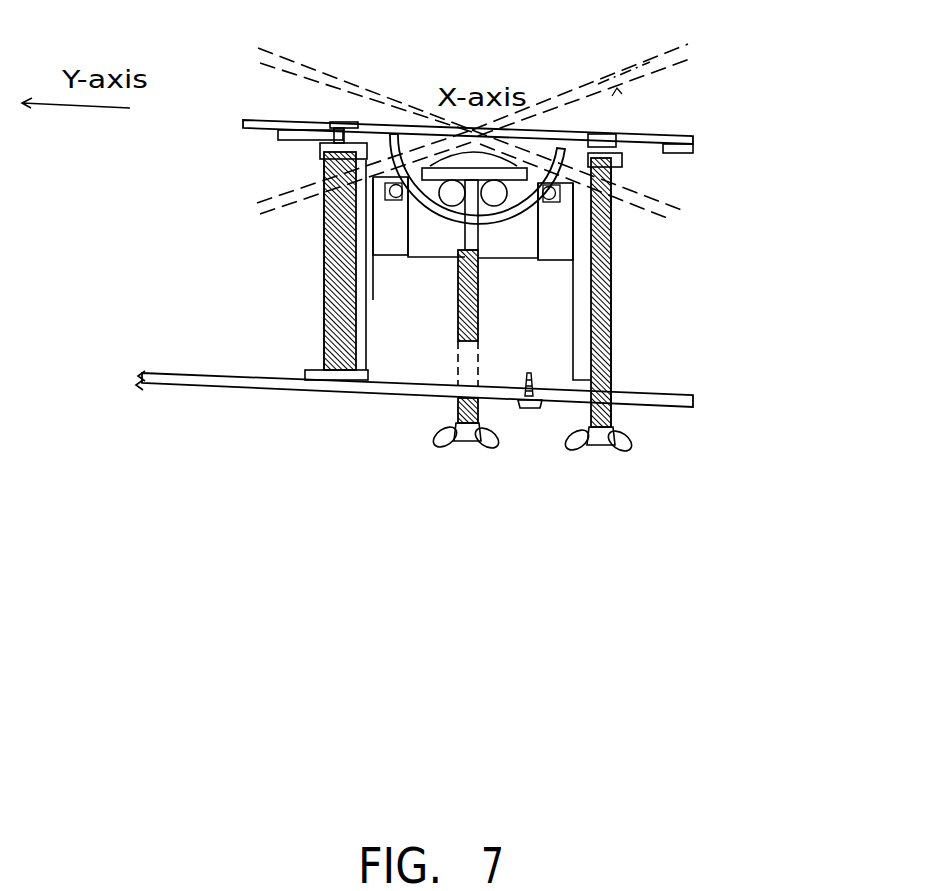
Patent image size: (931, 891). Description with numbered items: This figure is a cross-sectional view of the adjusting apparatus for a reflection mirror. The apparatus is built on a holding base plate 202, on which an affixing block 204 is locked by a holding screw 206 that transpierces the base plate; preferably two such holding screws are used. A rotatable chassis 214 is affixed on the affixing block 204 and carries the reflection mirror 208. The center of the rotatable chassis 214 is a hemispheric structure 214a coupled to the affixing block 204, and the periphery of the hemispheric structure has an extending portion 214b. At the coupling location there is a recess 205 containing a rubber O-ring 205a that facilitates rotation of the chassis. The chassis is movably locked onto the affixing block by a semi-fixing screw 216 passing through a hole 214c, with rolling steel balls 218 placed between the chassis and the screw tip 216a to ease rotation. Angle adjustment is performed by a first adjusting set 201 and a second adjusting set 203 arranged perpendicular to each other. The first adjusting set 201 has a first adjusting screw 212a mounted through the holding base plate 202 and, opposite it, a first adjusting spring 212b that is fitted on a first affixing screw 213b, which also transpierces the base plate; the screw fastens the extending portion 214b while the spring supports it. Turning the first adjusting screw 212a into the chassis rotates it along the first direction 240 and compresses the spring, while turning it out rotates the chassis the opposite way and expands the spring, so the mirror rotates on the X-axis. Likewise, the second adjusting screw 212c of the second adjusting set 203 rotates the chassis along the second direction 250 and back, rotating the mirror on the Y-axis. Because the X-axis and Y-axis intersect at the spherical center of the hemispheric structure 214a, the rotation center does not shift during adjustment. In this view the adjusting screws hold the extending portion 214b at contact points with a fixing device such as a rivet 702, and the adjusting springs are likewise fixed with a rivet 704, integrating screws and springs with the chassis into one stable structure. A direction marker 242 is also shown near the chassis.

The first adjusting set 201 is at (599, 467).
The holding base plate 202 is at (665, 404).
The second adjusting set 203 is at (467, 470).
The affixing block 204 is at (538, 332).
The recess 205 is at (318, 150).
The rubber O-ring 205a is at (322, 252).
The holding screw 206 is at (531, 409).
The reflection mirror 208 is at (632, 136).
The first adjusting screw 212a is at (606, 446).
The first adjusting spring 212b is at (320, 307).
The second adjusting screw 212c is at (440, 444).
The first affixing screw 213b is at (327, 372).
The rotatable chassis 214 is at (616, 126).
The hemispheric structure 214a is at (408, 193).
The extending portion 214b is at (693, 150).
The hole 214c is at (468, 238).
The semi-fixing screw 216 is at (500, 285).
The screw tip 216a is at (622, 170).
The rolling steel ball 218 is at (612, 236).
The first direction 240 is at (560, 112).
The block 242 is at (356, 105).
The second direction 250 is at (481, 54).
The rivet 702 is at (623, 162).
The rivet 704 is at (320, 144).